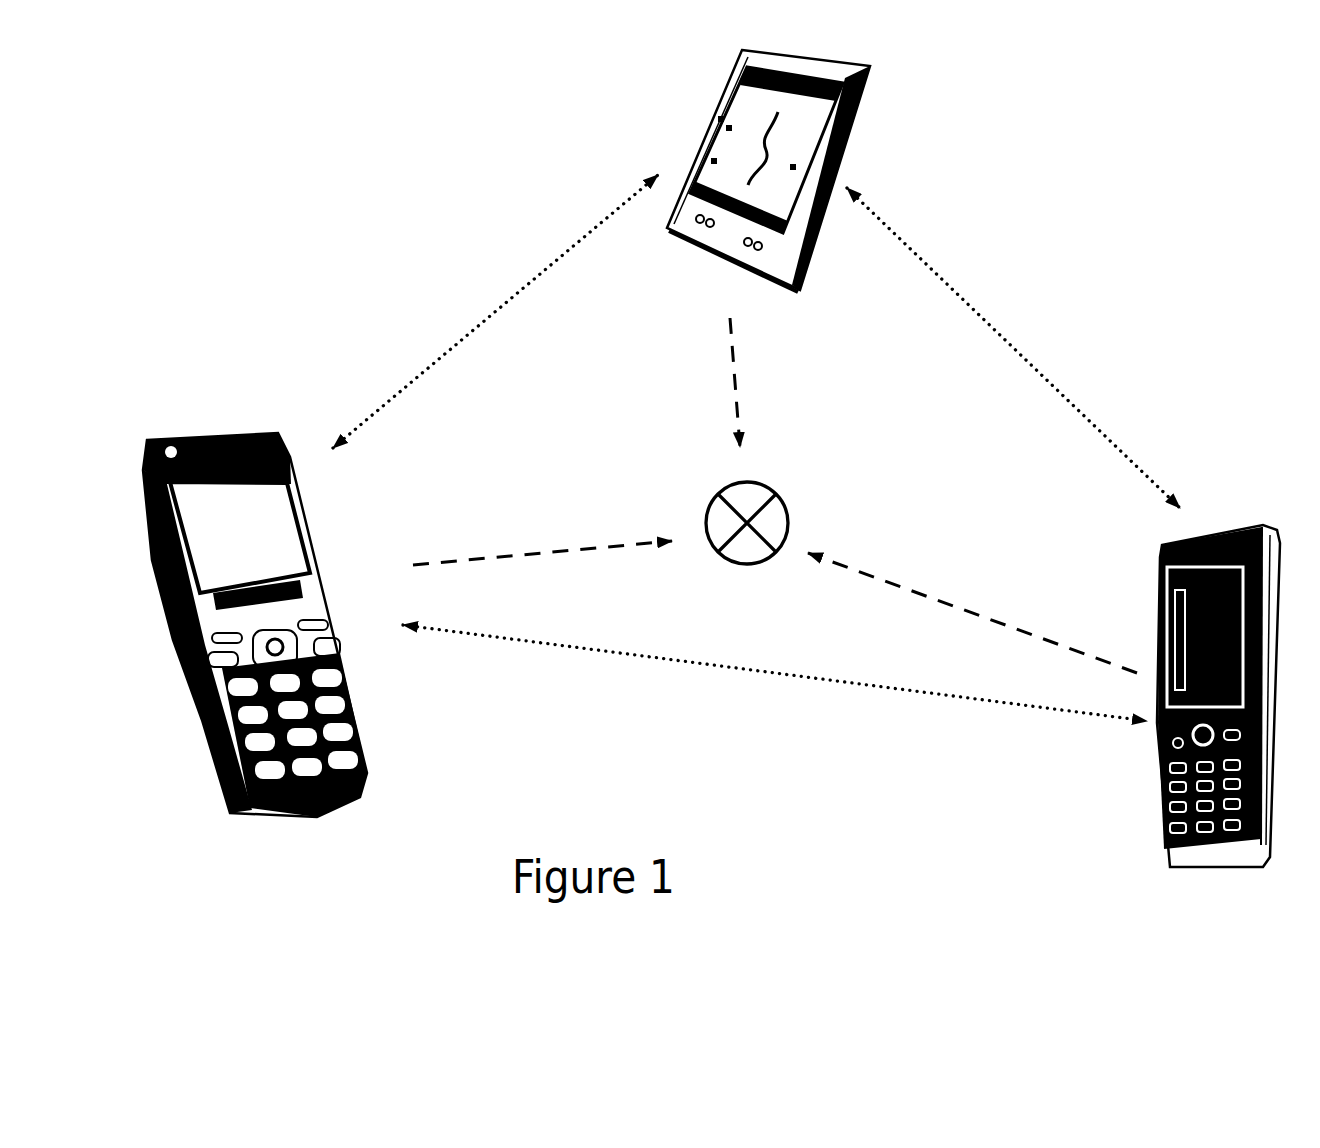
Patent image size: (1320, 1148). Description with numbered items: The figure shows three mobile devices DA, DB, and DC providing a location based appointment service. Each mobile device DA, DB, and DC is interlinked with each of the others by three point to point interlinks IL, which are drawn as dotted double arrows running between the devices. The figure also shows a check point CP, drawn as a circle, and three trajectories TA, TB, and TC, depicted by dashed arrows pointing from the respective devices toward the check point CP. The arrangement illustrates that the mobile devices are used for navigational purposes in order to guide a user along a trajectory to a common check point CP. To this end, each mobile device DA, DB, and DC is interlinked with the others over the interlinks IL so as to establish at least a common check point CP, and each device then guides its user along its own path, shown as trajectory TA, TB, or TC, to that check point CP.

The mobile device DA is at (812, 171).
The mobile device DB is at (1172, 696).
The mobile device DC is at (255, 639).
The check point CP is at (778, 517).
The trajectory TA is at (781, 382).
The trajectory TB is at (972, 606).
The trajectory TC is at (542, 522).
The point to point interlink IL is at (756, 468).